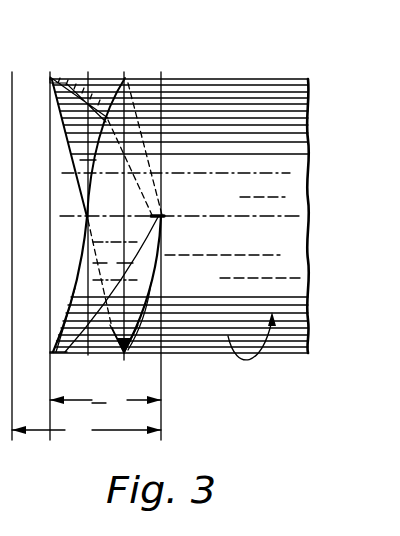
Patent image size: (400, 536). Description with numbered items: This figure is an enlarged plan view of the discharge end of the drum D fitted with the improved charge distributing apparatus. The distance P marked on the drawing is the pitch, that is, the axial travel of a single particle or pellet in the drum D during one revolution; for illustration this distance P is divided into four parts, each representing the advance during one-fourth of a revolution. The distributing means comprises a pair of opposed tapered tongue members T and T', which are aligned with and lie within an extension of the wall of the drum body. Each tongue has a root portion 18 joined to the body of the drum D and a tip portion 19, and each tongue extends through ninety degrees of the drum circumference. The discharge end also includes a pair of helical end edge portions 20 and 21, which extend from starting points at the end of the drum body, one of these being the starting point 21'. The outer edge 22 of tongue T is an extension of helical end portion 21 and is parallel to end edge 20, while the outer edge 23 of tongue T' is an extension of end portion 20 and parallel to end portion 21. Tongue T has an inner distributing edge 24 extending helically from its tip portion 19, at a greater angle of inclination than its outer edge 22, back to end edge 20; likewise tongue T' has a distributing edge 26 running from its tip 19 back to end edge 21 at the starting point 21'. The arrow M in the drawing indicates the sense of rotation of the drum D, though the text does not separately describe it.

The root portion 18 is at (109, 228).
The tip portion 19 is at (68, 98).
The helical end edge portion 20 is at (111, 329).
The helical end edge portion 21 is at (124, 117).
The starting point 21' is at (185, 205).
The outer edge 22 is at (80, 258).
The outer edge 23 is at (78, 171).
The distributing edge 24 is at (130, 281).
The distributing edge 26 is at (107, 118).
The drum D is at (238, 79).
The tongue member T is at (114, 229).
The tongue member T' is at (91, 117).
The direction of rotation M is at (249, 336).
The pitch P is at (86, 257).